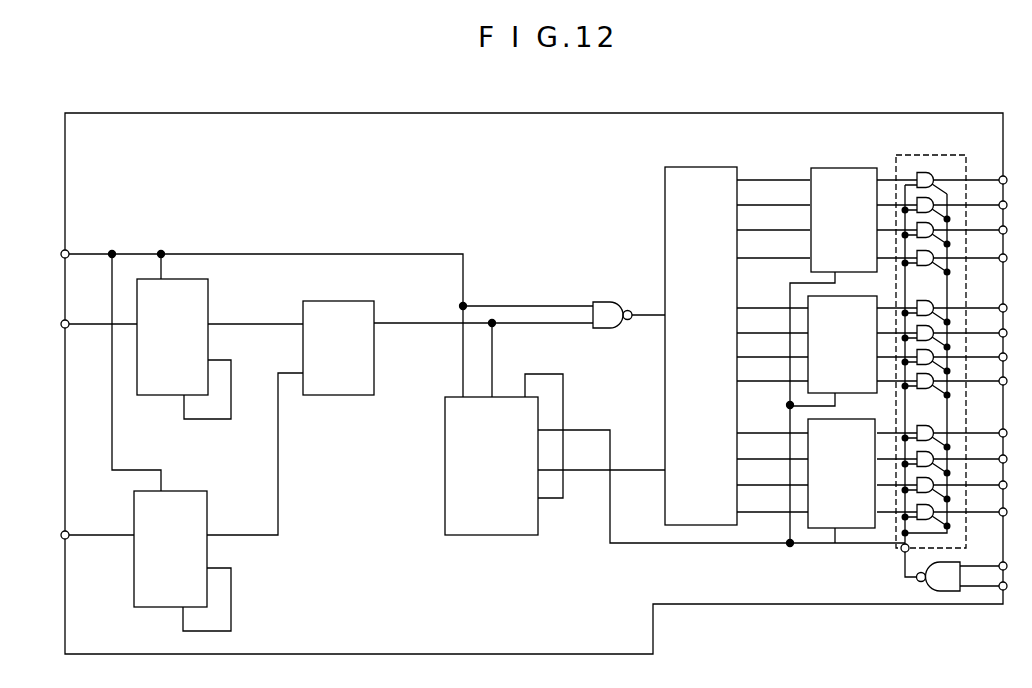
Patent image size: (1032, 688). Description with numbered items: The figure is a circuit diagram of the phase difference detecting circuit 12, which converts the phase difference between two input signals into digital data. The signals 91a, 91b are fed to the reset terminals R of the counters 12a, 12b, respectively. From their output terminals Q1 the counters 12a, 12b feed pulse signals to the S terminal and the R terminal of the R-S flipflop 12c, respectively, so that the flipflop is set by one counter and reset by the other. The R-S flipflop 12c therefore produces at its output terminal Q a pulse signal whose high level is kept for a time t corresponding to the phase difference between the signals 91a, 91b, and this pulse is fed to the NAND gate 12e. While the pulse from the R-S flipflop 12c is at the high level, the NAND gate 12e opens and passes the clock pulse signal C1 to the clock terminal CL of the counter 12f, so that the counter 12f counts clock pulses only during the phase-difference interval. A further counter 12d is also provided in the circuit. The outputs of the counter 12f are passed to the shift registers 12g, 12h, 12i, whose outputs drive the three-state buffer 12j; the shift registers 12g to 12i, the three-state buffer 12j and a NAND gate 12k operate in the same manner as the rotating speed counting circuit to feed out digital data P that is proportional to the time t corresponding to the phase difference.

The phase difference detecting circuit 12 is at (566, 113).
The counter 12a is at (155, 396).
The counter 12b is at (153, 608).
The R-S flipflop 12c is at (345, 396).
The counter 12d is at (484, 536).
The NAND gate 12e is at (612, 292).
The counter 12f is at (704, 167).
The shift register 12g is at (856, 168).
The shift register 12h is at (806, 297).
The shift register 12i is at (790, 412).
The three-state buffer 12j is at (936, 148).
The NAND gate 12k is at (926, 588).
The signal 91a is at (93, 328).
The signal 91b is at (95, 539).
The clock pulse signal C1 is at (71, 258).